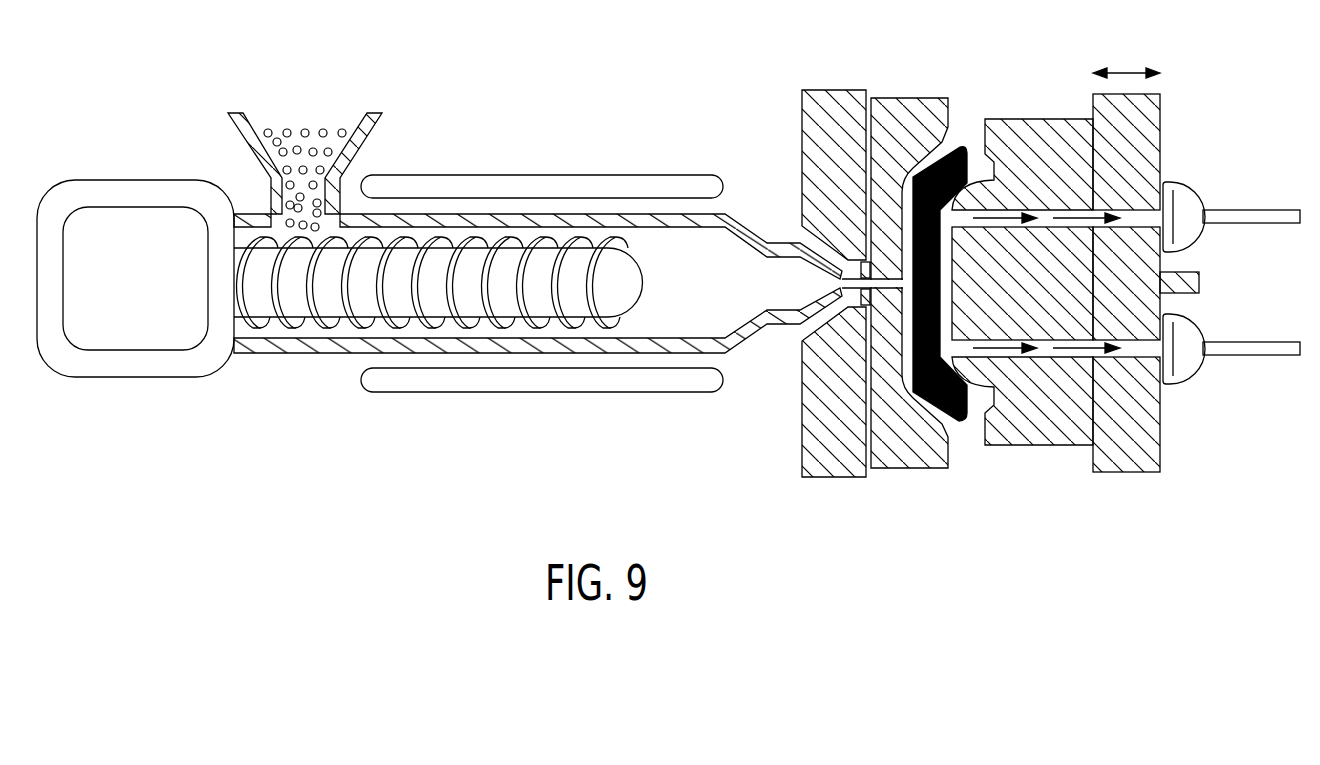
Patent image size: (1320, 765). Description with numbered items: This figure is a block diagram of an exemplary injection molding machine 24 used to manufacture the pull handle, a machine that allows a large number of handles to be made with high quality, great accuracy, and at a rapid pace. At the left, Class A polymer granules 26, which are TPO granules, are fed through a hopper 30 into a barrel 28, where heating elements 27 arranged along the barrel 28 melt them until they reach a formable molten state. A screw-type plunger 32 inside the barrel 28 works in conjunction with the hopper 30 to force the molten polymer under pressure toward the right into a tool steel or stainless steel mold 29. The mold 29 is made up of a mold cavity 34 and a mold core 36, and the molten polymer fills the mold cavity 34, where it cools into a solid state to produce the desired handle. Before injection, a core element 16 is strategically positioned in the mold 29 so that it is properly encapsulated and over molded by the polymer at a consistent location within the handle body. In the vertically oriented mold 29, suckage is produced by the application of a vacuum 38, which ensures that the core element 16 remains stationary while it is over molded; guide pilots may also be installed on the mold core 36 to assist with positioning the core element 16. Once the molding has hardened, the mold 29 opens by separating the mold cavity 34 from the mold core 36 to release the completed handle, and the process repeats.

The core element 16 is at (907, 393).
The injection molding machine 24 is at (486, 78).
The Class A polymer granules 26 is at (303, 133).
The heating elements 27 is at (512, 172).
The barrel 28 is at (318, 343).
The mold 29 is at (1048, 79).
The hopper 30 is at (368, 135).
The screw-type plunger 32 is at (607, 295).
The mold cavity 34 is at (905, 185).
The mold core 36 is at (1065, 447).
The vacuum 38 is at (1182, 385).